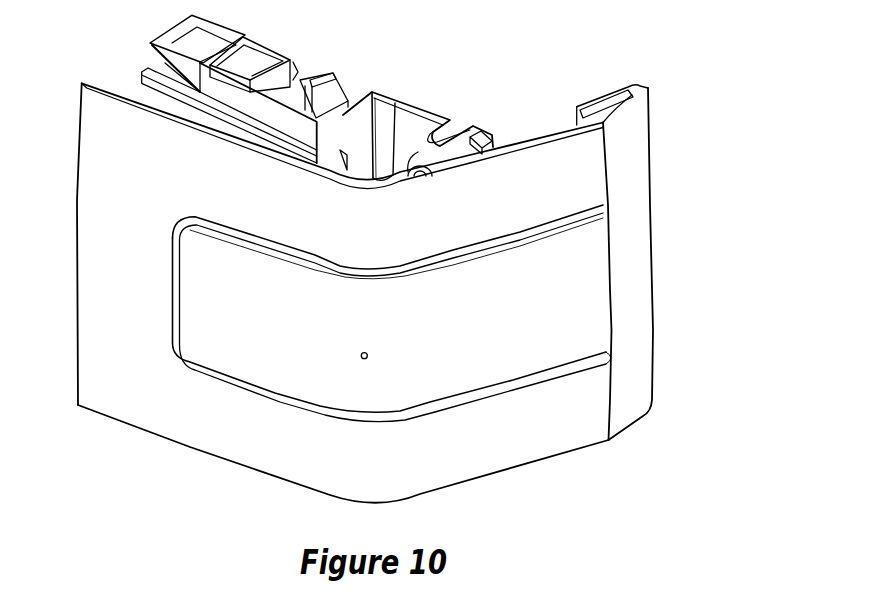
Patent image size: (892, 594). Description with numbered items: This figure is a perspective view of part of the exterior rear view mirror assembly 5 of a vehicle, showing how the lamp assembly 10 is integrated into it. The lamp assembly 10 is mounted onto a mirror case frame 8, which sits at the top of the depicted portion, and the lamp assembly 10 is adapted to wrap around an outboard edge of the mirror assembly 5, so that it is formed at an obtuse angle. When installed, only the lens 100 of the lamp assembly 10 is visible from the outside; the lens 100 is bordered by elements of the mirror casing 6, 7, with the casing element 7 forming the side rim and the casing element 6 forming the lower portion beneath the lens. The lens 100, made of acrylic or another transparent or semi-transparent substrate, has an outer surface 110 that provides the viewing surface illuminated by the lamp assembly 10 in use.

The exterior rear view mirror assembly 5 is at (521, 107).
The mirror casing element 6 is at (588, 427).
The mirror casing element 7 is at (630, 197).
The mirror case frame 8 is at (383, 93).
The lamp assembly 10 is at (262, 401).
The lens 100 is at (587, 293).
The outer surface 110 is at (508, 355).